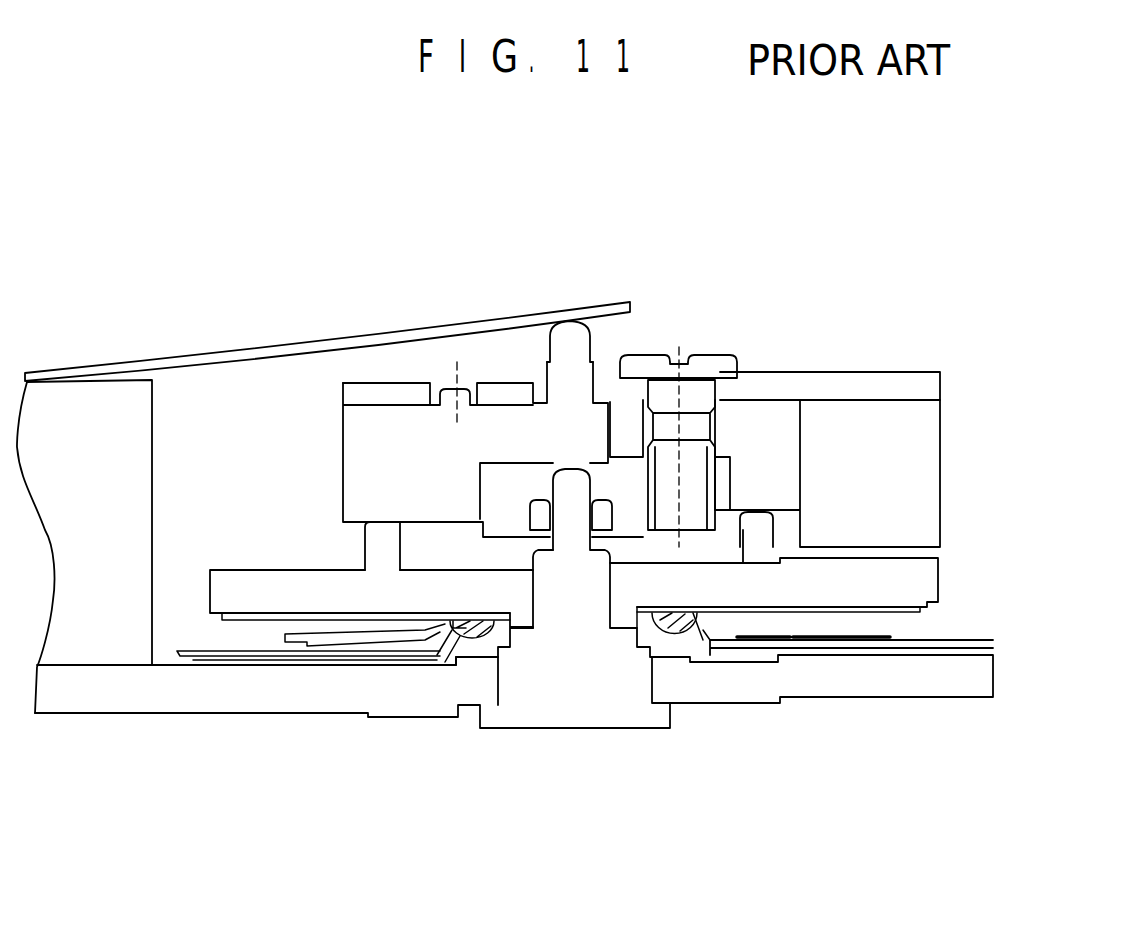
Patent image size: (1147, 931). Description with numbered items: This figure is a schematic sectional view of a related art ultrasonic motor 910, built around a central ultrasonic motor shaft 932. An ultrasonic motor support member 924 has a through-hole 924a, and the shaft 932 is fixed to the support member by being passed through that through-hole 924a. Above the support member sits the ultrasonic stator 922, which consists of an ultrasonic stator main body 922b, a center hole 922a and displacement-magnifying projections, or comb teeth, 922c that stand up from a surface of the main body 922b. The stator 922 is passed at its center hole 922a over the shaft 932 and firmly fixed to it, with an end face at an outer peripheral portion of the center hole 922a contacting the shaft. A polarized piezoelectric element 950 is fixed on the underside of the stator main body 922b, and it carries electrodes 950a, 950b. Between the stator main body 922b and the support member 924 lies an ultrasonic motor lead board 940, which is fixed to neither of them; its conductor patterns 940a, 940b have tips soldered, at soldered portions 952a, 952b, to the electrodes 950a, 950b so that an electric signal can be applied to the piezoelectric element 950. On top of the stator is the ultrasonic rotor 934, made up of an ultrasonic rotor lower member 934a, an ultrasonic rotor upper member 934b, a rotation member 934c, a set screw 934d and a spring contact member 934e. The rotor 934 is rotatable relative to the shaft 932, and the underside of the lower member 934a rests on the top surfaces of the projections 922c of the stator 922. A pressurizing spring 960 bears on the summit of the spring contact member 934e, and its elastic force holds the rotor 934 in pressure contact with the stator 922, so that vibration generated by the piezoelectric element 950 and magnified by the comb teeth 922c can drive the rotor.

The ultrasonic motor 910 is at (440, 195).
The ultrasonic stator 922 is at (284, 598).
The center hole 922a is at (540, 592).
The ultrasonic stator main body 922b is at (242, 598).
The projections (comb teeth) 922c is at (375, 550).
The ultrasonic motor support member 924 is at (933, 680).
The through-hole 924a is at (485, 670).
The ultrasonic motor shaft 932 is at (567, 712).
The ultrasonic rotor 934 is at (763, 427).
The ultrasonic rotor lower member 934a is at (505, 493).
The ultrasonic rotor upper member 934b is at (575, 351).
The rotation member 934c is at (917, 480).
The set screw 934d is at (720, 362).
The spring contact member 934e is at (573, 350).
The ultrasonic motor lead board 940 is at (288, 652).
The conductor pattern 940a is at (712, 630).
The conductor pattern 940b is at (433, 630).
The piezoelectric element 950 is at (917, 608).
The electrode 950a is at (687, 605).
The electrode 950b is at (467, 610).
The soldered portion 952a is at (677, 622).
The soldered portion 952b is at (471, 640).
The pressurizing spring 960 is at (297, 347).